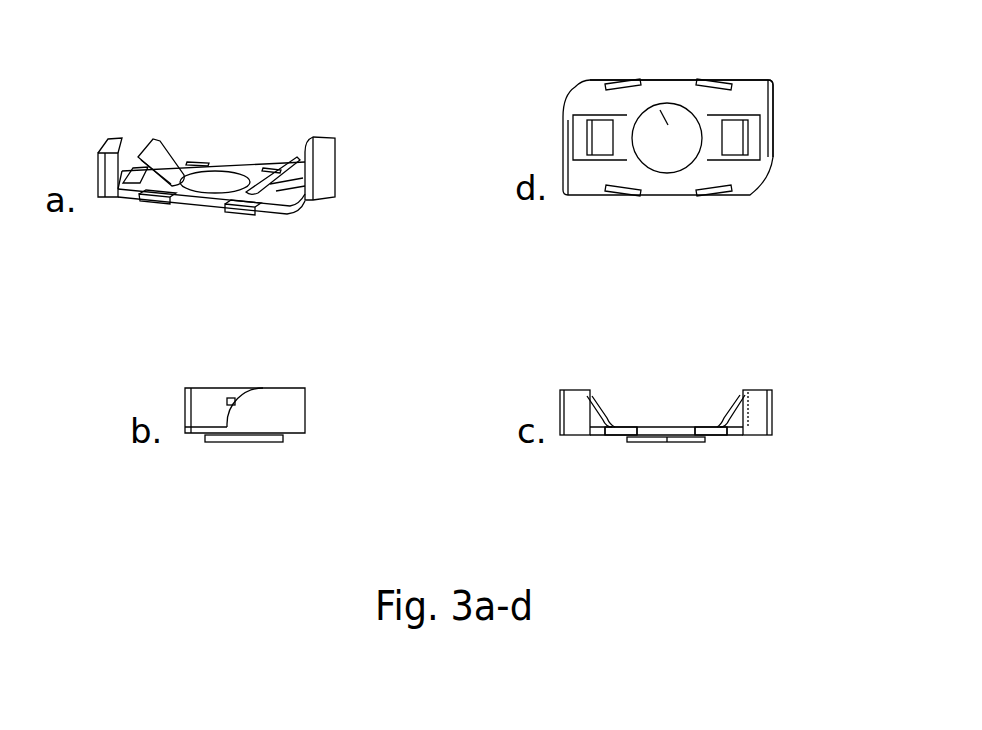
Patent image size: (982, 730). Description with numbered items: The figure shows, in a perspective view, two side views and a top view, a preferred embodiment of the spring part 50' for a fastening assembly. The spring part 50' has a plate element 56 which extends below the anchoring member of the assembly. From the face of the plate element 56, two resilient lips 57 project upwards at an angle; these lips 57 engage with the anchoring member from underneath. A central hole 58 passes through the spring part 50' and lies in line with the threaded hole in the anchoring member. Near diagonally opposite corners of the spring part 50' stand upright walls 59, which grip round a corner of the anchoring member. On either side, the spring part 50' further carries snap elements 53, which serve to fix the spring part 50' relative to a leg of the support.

In FIG. 3b, the spring part 50' is at (236, 453).
In FIG. 3c, the spring part 50' is at (706, 454).
In FIG. 3d, the spring part 50' is at (700, 150).
In FIG. 3a, the snap elements 53 is at (153, 204).
In FIG. 3c, the snap elements 53 is at (618, 437).
In FIG. 3d, the snap elements 53 is at (712, 197).
In FIG. 3a, the plate element 56 is at (177, 187).
In FIG. 3d, the plate element 56 is at (645, 100).
In FIG. 3a, the resilient lips 57 is at (287, 163).
In FIG. 3d, the resilient lips 57 is at (602, 135).
In FIG. 3d, the central hole 58 is at (667, 130).
In FIG. 3a, the upright walls 59 is at (103, 177).
In FIG. 3b, the upright walls 59 is at (273, 400).
In FIG. 3c, the upright walls 59 is at (772, 403).
In FIG. 3d, the upright walls 59 is at (775, 115).